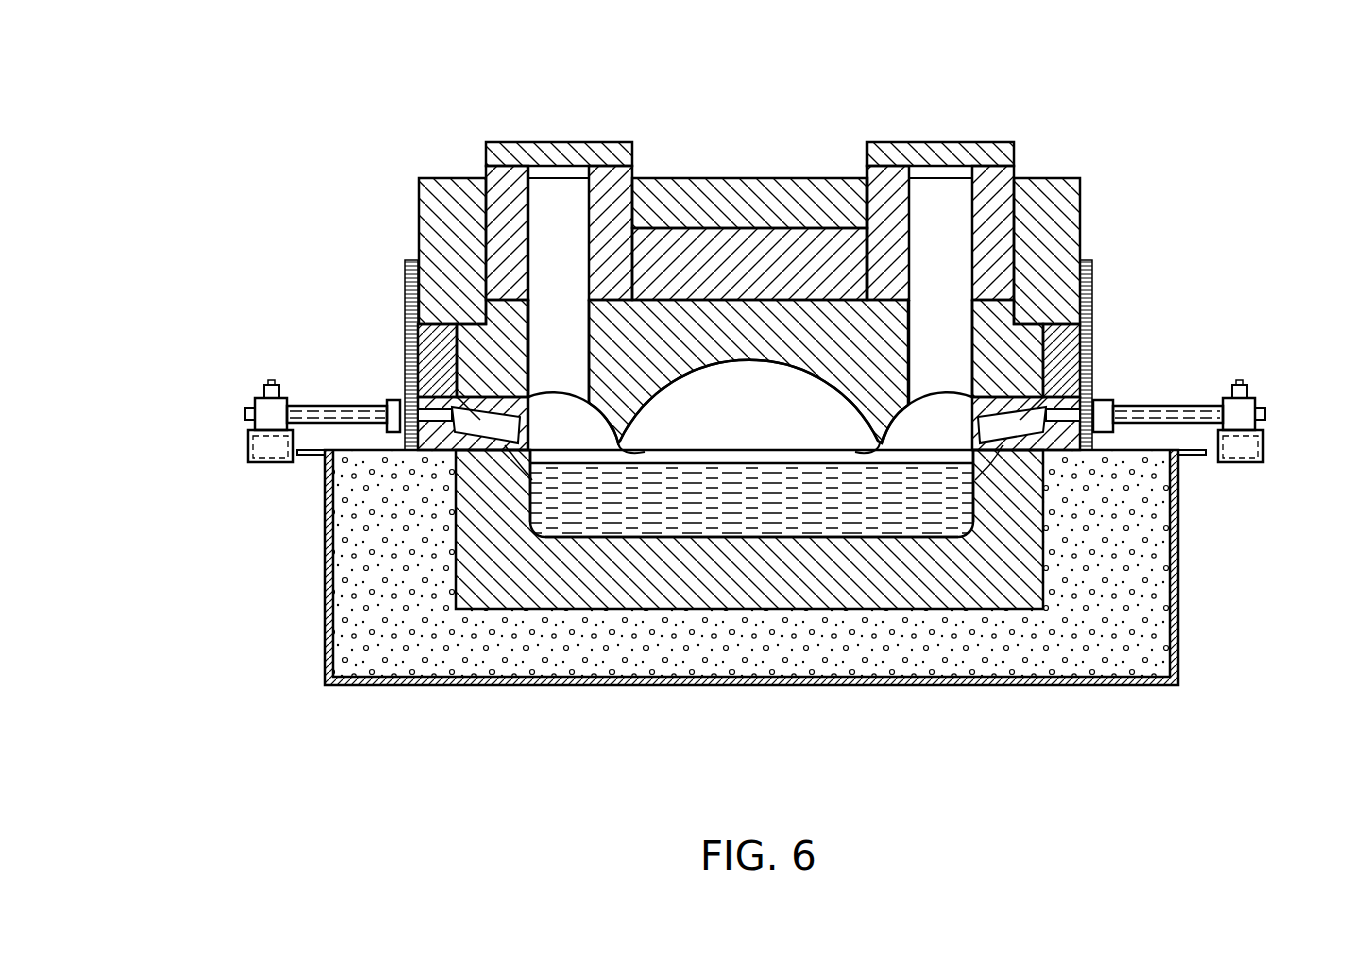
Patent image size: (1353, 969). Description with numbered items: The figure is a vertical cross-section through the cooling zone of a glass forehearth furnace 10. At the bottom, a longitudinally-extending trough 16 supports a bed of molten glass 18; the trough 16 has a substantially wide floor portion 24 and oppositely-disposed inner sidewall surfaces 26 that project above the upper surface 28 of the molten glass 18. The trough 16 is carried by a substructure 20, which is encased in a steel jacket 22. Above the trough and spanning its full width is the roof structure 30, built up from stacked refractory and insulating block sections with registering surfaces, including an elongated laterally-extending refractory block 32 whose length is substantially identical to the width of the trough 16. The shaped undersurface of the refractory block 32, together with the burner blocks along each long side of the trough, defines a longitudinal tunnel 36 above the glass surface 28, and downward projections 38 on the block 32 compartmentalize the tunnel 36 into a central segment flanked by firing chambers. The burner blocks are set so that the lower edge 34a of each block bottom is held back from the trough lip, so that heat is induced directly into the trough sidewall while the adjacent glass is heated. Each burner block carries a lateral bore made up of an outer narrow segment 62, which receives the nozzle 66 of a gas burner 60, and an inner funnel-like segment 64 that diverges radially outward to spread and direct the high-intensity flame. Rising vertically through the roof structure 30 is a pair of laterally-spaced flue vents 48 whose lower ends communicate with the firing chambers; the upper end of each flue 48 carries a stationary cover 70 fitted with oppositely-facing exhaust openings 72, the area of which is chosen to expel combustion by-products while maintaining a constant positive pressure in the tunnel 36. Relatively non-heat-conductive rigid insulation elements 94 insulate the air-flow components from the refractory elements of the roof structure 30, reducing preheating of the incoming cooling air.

The glass forehearth furnace 10 is at (453, 714).
The trough 16 is at (675, 600).
The molten glass 18 is at (715, 515).
The substructure 20 is at (705, 655).
The steel jacket 22 is at (1180, 582).
The floor portion 24 is at (768, 537).
The inner sidewall surfaces 26 is at (751, 486).
The upper surface 28 is at (802, 462).
The roof structure 30 is at (685, 130).
The refractory blocks 32 is at (670, 343).
The lower edge of burner block 34a is at (505, 443).
The tunnel 36 is at (750, 400).
The downward projections 38 is at (749, 440).
The flue vents 48 is at (568, 250).
The gas burners 60 is at (258, 406).
The narrow bore segment 62 is at (1080, 398).
The funnel-like bore segment 64 is at (503, 425).
The nozzle 66 is at (466, 392).
The cover 70 is at (522, 142).
The exhaust openings 72 is at (553, 170).
The insulation elements 94 is at (419, 228).